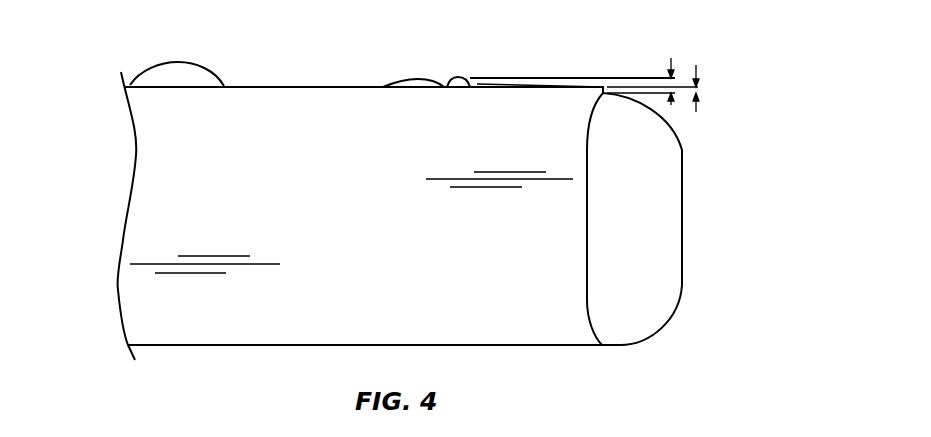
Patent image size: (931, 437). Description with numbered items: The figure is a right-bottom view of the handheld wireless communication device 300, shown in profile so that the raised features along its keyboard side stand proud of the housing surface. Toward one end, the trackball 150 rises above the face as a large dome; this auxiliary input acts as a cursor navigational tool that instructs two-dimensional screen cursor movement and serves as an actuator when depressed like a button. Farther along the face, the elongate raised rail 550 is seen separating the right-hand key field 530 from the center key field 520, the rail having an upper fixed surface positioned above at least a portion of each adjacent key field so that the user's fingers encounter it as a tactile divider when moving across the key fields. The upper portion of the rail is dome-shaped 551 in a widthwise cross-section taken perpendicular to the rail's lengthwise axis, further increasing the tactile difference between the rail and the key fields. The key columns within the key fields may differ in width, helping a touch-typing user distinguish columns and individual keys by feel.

The trackball 150 is at (183, 72).
The handheld wireless communication device 300 is at (718, 194).
The center key field 520 is at (415, 70).
The dome-shaped upper portion 551 is at (458, 69).
The elongate raised rail 550 is at (461, 66).
The right-hand key field 530 is at (545, 66).